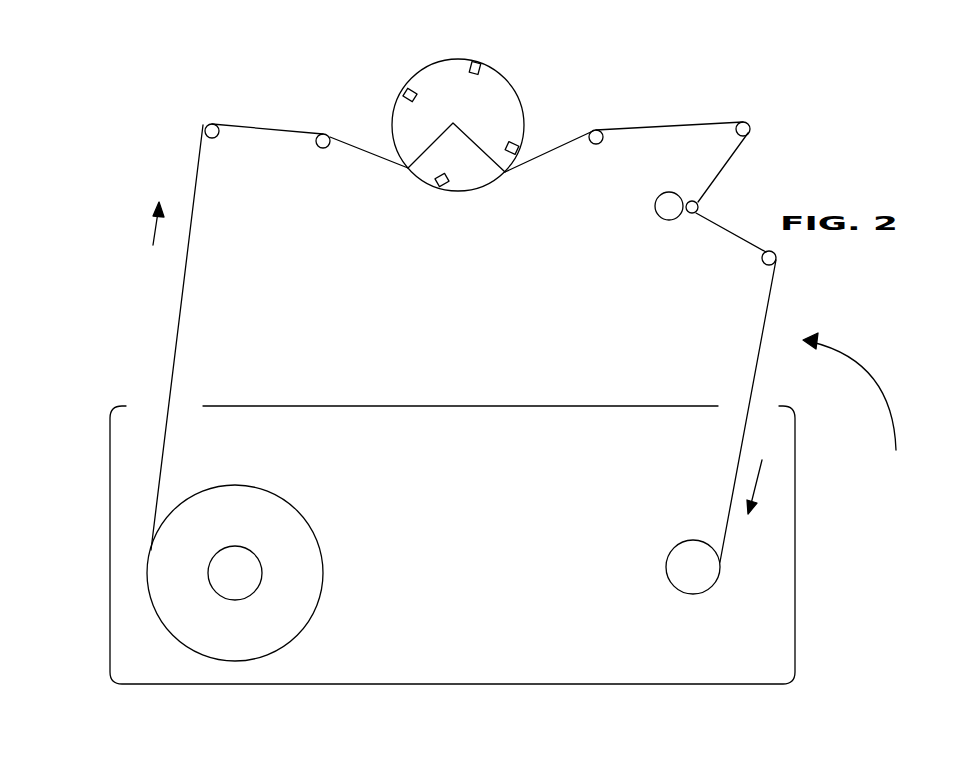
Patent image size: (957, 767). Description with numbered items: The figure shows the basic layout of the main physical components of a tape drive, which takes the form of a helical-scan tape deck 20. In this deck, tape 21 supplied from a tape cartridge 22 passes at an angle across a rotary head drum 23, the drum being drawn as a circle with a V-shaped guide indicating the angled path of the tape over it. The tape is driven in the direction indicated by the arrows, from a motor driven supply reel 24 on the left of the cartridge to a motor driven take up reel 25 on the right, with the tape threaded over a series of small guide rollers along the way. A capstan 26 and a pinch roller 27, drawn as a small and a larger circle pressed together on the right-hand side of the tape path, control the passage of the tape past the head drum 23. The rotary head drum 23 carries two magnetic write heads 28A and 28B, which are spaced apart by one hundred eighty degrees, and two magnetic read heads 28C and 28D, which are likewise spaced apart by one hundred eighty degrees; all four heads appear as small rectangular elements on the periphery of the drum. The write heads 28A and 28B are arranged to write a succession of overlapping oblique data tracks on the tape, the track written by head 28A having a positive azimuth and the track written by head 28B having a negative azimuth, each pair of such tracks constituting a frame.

The helical-scan tape deck 20 is at (504, 508).
The tape 21 is at (182, 302).
The tape cartridge 22 is at (745, 573).
The rotary head drum 23 is at (417, 127).
The supply reel 24 is at (202, 543).
The take up reel 25 is at (698, 573).
The capstan 26 is at (697, 203).
The pinch roller 27 is at (665, 202).
The magnetic write head 28A is at (433, 183).
The magnetic write head 28B is at (480, 63).
The magnetic read head 28C is at (405, 92).
The magnetic read head 28D is at (513, 147).